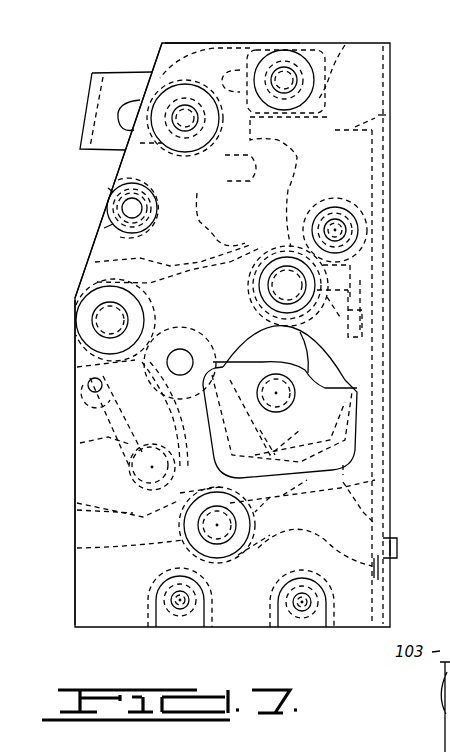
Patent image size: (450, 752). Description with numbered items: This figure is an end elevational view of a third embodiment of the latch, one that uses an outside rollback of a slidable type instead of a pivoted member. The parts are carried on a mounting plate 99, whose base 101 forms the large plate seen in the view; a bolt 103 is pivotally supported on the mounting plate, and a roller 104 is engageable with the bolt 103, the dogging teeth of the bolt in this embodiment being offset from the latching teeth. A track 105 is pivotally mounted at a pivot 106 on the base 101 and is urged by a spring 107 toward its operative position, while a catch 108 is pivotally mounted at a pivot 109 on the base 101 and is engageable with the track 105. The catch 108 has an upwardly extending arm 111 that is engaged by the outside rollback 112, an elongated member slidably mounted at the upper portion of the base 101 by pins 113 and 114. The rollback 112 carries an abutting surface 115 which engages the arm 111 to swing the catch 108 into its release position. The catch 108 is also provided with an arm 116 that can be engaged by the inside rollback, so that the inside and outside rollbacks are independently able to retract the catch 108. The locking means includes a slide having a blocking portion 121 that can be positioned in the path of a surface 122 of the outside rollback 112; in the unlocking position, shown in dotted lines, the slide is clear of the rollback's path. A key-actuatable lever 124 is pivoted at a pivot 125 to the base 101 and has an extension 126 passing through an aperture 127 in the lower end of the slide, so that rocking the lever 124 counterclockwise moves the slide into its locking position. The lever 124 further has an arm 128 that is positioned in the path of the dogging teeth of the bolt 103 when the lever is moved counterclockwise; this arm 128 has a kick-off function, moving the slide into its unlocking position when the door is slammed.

The mounting plate 99 is at (393, 35).
The base 101 is at (192, 48).
The bolt 103 is at (307, 356).
The roller 104 is at (78, 363).
The track 105 is at (97, 250).
The pivot of track 106 is at (100, 306).
The spring 107 is at (78, 443).
The catch 108 is at (200, 186).
The pivot of catch 109 is at (312, 285).
The upwardly extending arm 111 is at (300, 167).
The outside rollback 112 is at (117, 74).
The pin 113 is at (186, 116).
The pin 114 is at (286, 78).
The abutting surface 115 is at (300, 152).
The arm 116 is at (362, 253).
The blocking portion 121 is at (382, 115).
The surface 122 is at (333, 58).
The key-actuatable lever 124 is at (76, 550).
The pivot of lever 125 is at (223, 537).
The extension 126 is at (398, 533).
The aperture 127 is at (395, 563).
The arm 128 is at (377, 459).